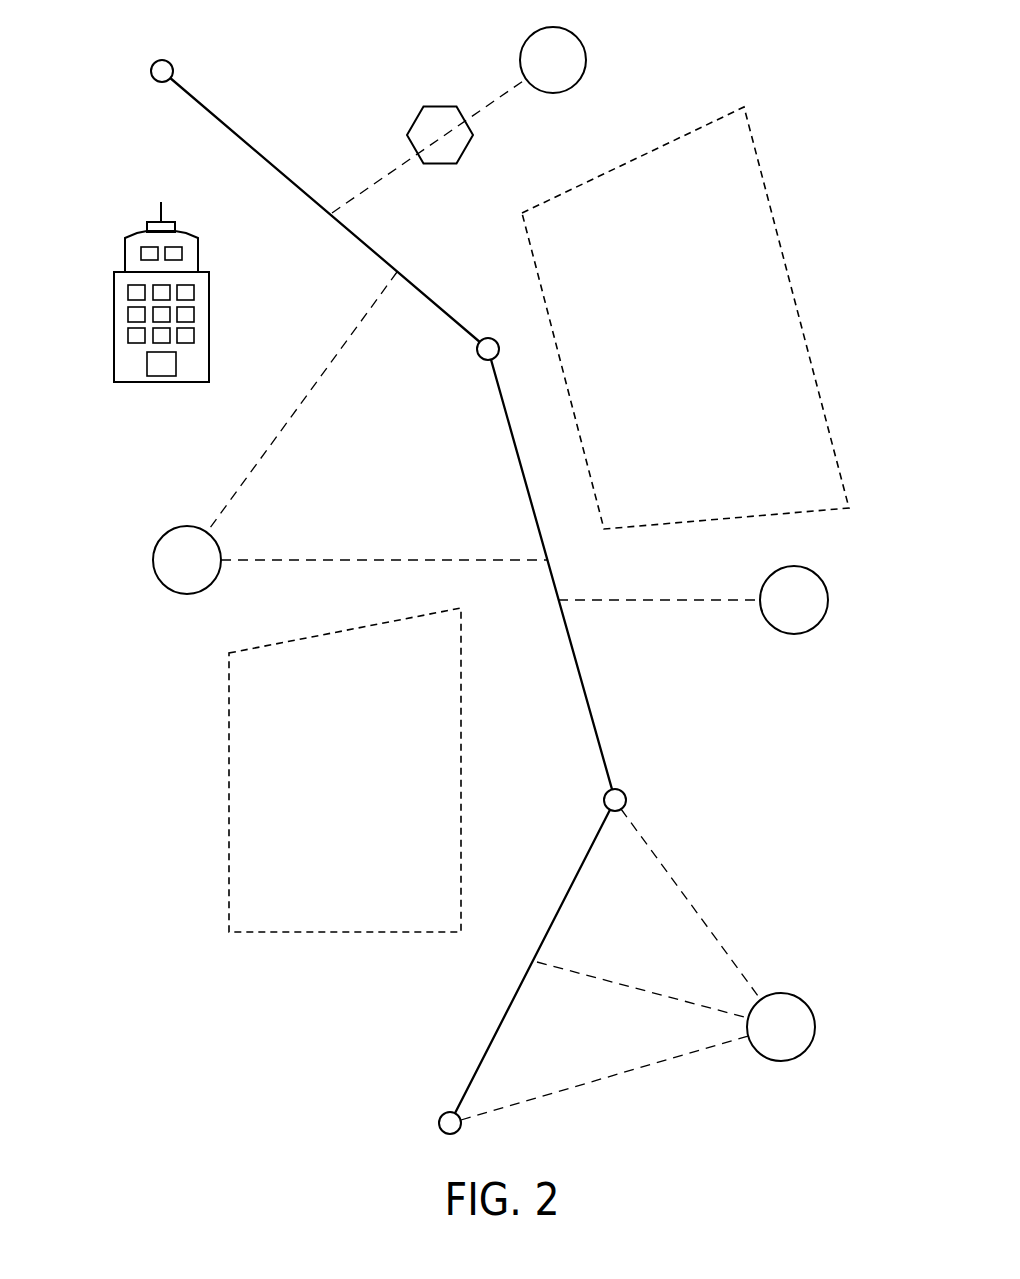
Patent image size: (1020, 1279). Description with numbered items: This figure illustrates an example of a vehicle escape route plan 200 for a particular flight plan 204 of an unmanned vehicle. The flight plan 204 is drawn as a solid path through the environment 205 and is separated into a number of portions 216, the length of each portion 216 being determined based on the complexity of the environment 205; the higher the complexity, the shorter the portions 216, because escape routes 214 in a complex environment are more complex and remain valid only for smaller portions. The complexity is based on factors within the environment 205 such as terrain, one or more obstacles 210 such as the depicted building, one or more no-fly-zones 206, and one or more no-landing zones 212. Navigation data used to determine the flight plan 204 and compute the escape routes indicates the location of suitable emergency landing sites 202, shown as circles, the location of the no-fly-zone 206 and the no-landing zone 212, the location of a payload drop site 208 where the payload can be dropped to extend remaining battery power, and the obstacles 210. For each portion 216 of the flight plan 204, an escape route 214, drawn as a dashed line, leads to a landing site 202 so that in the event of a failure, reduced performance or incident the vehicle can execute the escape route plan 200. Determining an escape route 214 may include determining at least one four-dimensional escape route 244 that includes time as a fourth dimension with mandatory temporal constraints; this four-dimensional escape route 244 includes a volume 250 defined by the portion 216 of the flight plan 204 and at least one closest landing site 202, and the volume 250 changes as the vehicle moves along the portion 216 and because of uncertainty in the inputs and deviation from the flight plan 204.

The vehicle escape route plan 200 is at (459, 569).
The landing site 202 is at (586, 62).
The flight plan 204 is at (410, 569).
The environment 205 is at (123, 247).
The no-fly-zone 206 is at (798, 309).
The payload drop site 208 is at (407, 132).
The obstacle 210 is at (114, 327).
The no-landing zone 212 is at (229, 793).
The escape route 214 is at (493, 98).
The portion 216 is at (300, 190).
The four-dimensional escape route 244 is at (686, 895).
The volume 250 is at (740, 902).